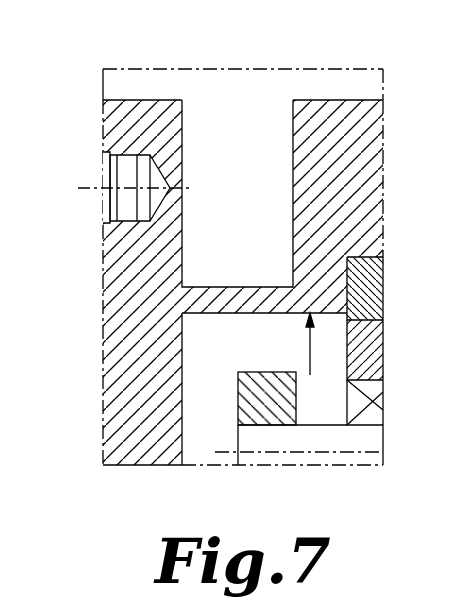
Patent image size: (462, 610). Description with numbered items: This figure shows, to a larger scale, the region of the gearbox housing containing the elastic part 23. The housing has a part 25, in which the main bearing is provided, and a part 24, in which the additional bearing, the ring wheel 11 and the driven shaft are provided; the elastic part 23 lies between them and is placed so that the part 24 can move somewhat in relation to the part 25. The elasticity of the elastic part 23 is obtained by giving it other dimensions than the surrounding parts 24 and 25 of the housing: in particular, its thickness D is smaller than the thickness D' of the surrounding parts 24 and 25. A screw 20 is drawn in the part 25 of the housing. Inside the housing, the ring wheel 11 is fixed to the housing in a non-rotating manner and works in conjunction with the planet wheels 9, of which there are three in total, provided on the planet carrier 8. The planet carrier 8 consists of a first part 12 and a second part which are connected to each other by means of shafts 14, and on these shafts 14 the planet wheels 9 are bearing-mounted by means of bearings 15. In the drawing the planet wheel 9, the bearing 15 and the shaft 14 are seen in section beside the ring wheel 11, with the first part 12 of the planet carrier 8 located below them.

The part of the housing 25 is at (137, 125).
The part of the housing 24 is at (332, 112).
The elastic part 23 is at (247, 110).
The thickness of the elastic part D is at (264, 279).
The thickness of the surrounding parts D' is at (330, 55).
The screw 20 is at (103, 197).
The ring wheel 11 is at (370, 291).
The planet wheel 9 is at (375, 356).
The bearing 15 is at (370, 392).
The shaft 14 is at (365, 442).
The first part of the planet carrier 12 is at (268, 443).
The planet carrier 8 is at (273, 410).